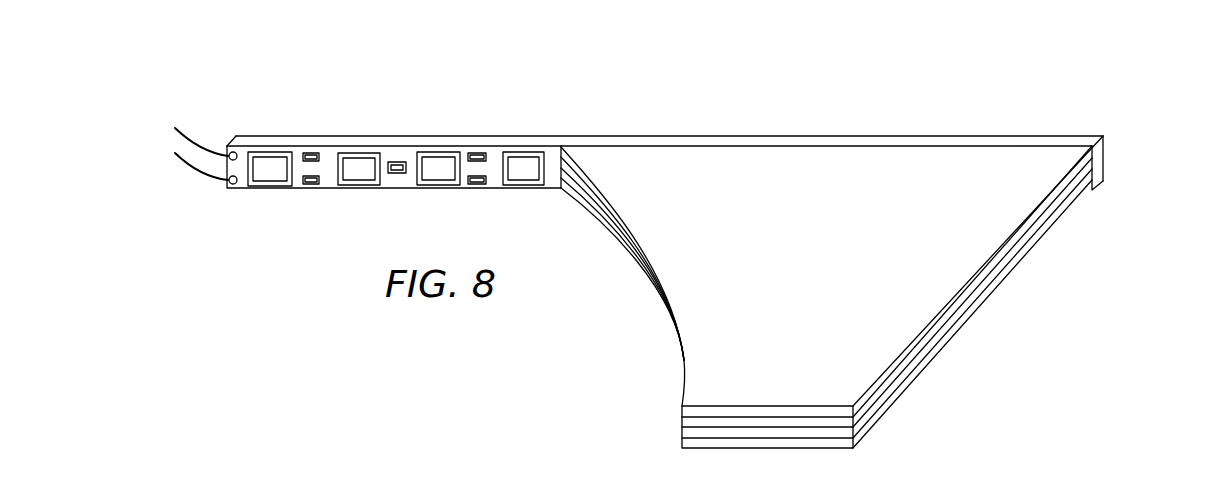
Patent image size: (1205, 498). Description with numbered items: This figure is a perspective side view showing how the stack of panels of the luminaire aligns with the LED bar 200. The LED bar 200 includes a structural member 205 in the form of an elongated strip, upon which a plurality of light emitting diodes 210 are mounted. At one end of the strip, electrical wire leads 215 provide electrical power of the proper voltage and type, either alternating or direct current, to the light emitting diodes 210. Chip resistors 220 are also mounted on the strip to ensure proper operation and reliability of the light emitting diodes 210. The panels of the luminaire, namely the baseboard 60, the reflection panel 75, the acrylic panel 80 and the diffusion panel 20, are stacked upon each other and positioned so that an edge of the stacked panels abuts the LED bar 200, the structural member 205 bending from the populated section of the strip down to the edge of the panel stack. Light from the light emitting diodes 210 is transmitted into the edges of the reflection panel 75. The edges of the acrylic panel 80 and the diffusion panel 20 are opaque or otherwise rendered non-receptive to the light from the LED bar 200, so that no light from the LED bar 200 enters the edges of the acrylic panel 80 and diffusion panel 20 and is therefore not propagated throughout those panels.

The LED bar 200 is at (935, 101).
The structural member 205 is at (543, 140).
The light emitting diodes 210 is at (277, 163).
The electrical wire leads 215 is at (237, 147).
The chip resistors 220 is at (400, 162).
The baseboard 60 is at (1077, 163).
The reflection panel 75 is at (1080, 173).
The acrylic panel 80 is at (1080, 186).
The diffusion panel 20 is at (1072, 203).